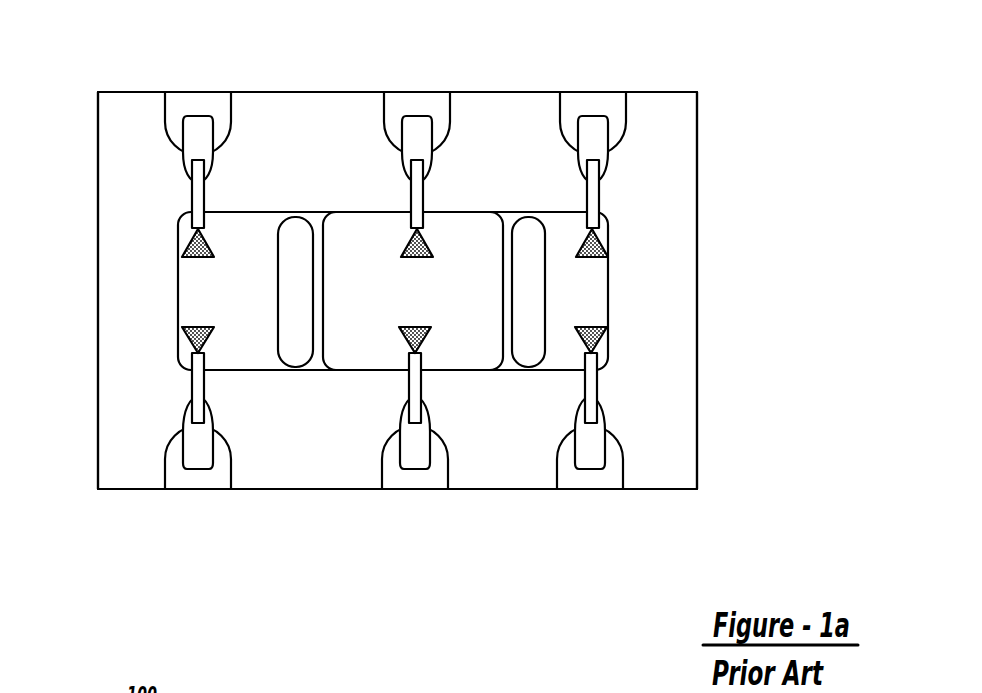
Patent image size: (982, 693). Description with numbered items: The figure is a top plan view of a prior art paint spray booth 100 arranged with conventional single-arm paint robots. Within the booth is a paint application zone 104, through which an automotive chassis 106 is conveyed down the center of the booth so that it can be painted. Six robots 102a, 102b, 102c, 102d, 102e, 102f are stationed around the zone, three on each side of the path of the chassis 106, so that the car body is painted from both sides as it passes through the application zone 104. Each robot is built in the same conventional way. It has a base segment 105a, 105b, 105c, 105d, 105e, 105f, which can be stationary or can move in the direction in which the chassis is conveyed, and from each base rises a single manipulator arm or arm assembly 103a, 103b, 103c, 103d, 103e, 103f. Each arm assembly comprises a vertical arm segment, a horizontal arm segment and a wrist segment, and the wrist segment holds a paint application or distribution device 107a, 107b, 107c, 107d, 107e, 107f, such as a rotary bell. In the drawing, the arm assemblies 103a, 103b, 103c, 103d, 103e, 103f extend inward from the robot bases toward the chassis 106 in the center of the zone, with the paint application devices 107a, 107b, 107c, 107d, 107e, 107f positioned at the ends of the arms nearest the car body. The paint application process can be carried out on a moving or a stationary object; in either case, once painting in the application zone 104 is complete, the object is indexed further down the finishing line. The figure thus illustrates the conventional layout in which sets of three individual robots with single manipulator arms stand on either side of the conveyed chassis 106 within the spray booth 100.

The paint spray booth 100 is at (117, 91).
The paint application zone 104 is at (497, 145).
The automotive chassis 106 is at (268, 212).
The robot 102a is at (165, 130).
The robot 102b is at (234, 468).
The robot 102c is at (458, 124).
The robot 102d is at (450, 475).
The robot 102e is at (630, 132).
The robot 102f is at (637, 465).
The base segment 105a is at (167, 113).
The base segment 105b is at (163, 460).
The base segment 105c is at (384, 107).
The base segment 105d is at (382, 460).
The base segment 105e is at (562, 117).
The base segment 105f is at (557, 460).
The arm assembly 103a is at (205, 193).
The arm assembly 103b is at (192, 383).
The arm assembly 103c is at (423, 200).
The arm assembly 103d is at (421, 380).
The arm assembly 103e is at (599, 210).
The arm assembly 103f is at (597, 386).
The paint application device 107a is at (197, 261).
The paint application device 107b is at (197, 326).
The paint application device 107c is at (417, 243).
The paint application device 107d is at (400, 333).
The paint application device 107e is at (588, 258).
The paint application device 107f is at (598, 327).